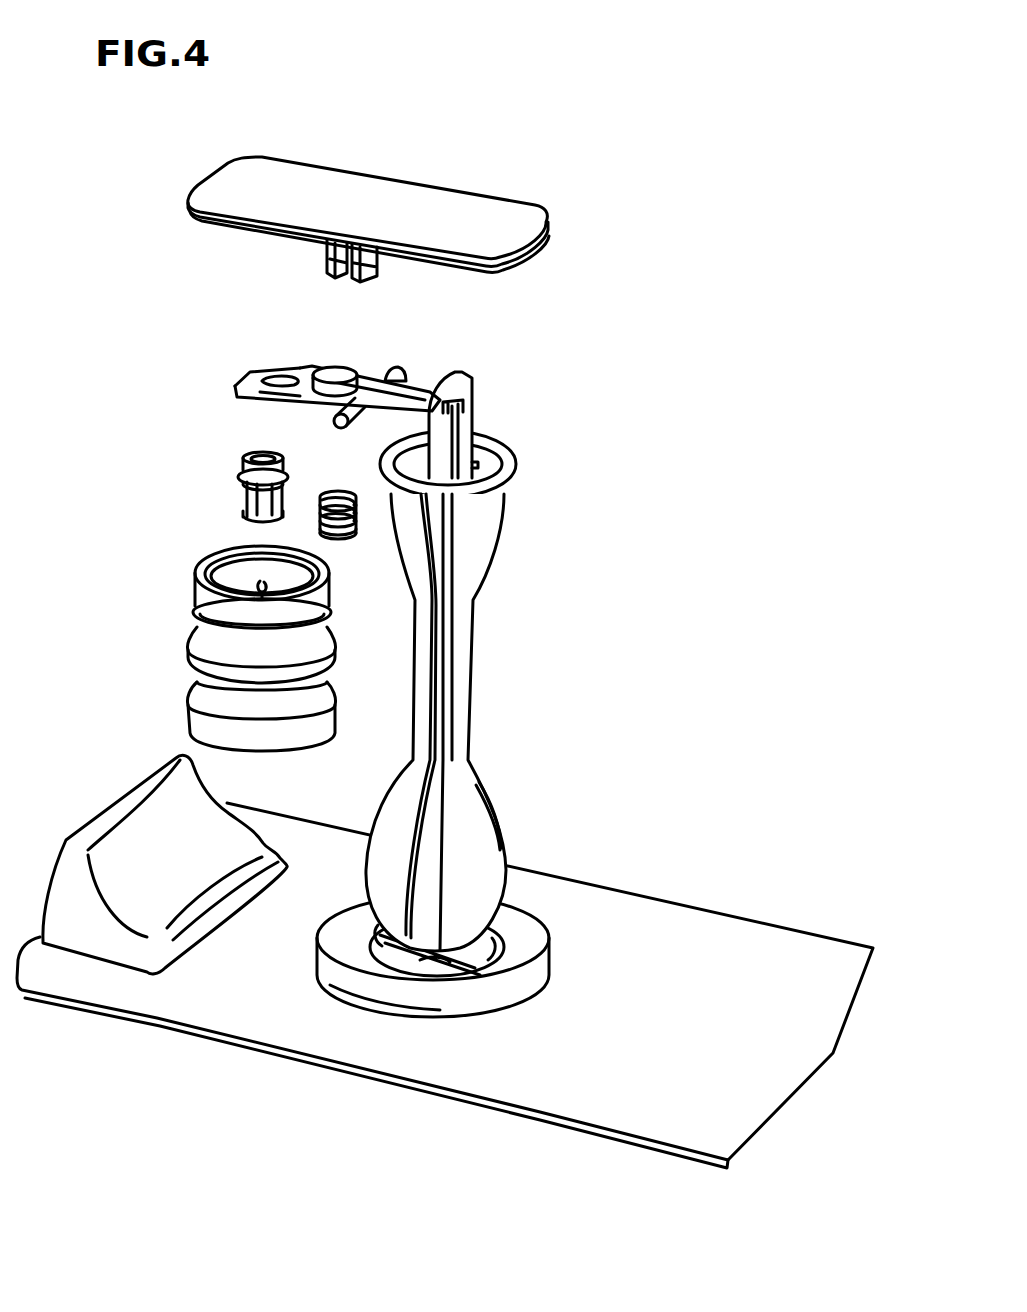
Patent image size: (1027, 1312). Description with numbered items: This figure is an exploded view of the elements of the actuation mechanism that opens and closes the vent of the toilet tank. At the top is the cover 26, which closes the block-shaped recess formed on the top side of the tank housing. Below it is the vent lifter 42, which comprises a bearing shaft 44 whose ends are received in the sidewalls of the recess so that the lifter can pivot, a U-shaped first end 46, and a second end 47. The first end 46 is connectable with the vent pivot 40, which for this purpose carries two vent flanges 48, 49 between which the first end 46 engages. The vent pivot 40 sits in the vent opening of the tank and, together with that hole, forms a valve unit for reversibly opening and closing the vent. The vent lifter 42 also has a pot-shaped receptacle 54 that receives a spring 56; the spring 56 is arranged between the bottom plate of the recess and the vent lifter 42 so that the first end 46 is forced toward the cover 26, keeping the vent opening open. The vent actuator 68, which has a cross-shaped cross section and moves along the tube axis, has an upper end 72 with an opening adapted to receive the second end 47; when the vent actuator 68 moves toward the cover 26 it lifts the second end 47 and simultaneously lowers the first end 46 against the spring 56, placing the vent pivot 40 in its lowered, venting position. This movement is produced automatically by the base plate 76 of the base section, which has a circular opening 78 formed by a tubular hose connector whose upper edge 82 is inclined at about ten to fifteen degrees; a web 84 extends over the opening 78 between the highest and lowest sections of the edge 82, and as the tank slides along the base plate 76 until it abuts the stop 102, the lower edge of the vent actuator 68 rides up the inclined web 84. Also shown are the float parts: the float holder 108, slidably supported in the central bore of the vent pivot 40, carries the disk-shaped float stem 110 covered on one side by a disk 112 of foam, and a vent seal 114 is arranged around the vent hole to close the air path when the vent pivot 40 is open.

The cover 26 is at (515, 220).
The vent lifter 42 is at (398, 354).
The bearing shaft 44 is at (400, 378).
The first end 46 is at (252, 377).
The second end 47 is at (452, 402).
The vent flange 48 is at (287, 477).
The vent flange 49 is at (227, 419).
The vent pivot 40 is at (208, 445).
The pot-shaped receptacle 54 is at (347, 368).
The spring 56 is at (340, 538).
The vent actuator 68 is at (495, 650).
The upper end 72 is at (470, 375).
The base plate 76 is at (757, 930).
The circular opening 78 is at (449, 987).
The upper edge 82 is at (342, 975).
The web 84 is at (506, 940).
The stop 102 is at (160, 835).
The float holder 108 is at (218, 551).
The float stem 110 is at (193, 640).
The disk 112 is at (193, 713).
The vent seal 114 is at (200, 582).